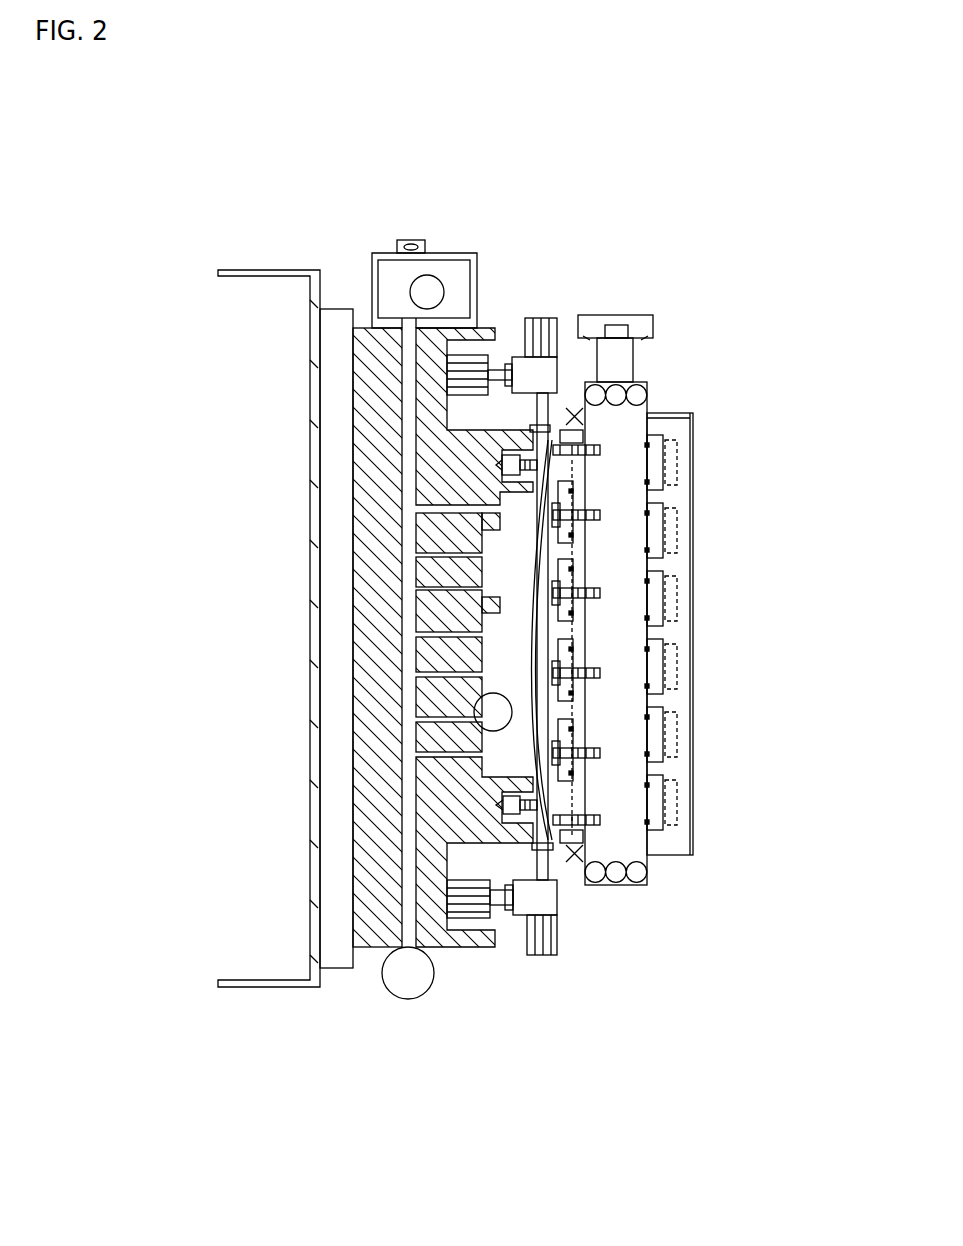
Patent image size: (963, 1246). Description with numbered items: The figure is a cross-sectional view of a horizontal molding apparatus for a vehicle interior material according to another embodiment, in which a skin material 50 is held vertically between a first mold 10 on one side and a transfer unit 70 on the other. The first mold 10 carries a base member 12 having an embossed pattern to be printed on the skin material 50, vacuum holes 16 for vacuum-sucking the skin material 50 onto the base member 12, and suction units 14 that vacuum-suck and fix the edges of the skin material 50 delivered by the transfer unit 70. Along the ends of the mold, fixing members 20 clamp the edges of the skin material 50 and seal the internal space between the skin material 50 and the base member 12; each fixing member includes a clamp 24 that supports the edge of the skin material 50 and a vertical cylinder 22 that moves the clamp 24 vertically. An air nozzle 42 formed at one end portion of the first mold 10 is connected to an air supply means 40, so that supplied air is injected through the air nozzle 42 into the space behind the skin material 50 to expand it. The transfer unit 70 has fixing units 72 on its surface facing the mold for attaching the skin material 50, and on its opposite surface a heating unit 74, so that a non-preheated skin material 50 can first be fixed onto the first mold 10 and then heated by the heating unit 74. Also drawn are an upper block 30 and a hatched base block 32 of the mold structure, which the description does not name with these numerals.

The first mold 10 is at (292, 650).
The base member 12 is at (450, 707).
The suction unit 14 is at (525, 458).
The vacuum hole 16 is at (480, 577).
The fixing member 20 is at (513, 924).
The vertical cylinder 22 is at (500, 375).
The clamp 24 is at (548, 428).
The upper guide block 30 is at (372, 253).
The base block 32 is at (410, 378).
The air supply means 40 is at (400, 977).
The air nozzle 42 is at (410, 910).
The skin material 50 is at (540, 700).
The transfer unit 70 is at (698, 757).
The fixing unit 72 is at (565, 417).
The heating unit 74 is at (680, 617).